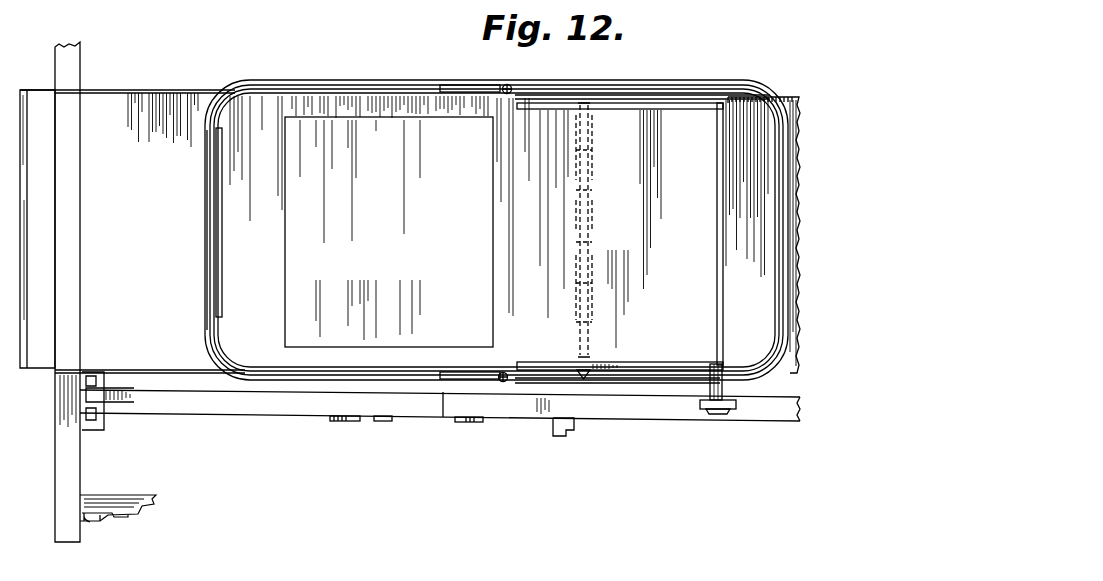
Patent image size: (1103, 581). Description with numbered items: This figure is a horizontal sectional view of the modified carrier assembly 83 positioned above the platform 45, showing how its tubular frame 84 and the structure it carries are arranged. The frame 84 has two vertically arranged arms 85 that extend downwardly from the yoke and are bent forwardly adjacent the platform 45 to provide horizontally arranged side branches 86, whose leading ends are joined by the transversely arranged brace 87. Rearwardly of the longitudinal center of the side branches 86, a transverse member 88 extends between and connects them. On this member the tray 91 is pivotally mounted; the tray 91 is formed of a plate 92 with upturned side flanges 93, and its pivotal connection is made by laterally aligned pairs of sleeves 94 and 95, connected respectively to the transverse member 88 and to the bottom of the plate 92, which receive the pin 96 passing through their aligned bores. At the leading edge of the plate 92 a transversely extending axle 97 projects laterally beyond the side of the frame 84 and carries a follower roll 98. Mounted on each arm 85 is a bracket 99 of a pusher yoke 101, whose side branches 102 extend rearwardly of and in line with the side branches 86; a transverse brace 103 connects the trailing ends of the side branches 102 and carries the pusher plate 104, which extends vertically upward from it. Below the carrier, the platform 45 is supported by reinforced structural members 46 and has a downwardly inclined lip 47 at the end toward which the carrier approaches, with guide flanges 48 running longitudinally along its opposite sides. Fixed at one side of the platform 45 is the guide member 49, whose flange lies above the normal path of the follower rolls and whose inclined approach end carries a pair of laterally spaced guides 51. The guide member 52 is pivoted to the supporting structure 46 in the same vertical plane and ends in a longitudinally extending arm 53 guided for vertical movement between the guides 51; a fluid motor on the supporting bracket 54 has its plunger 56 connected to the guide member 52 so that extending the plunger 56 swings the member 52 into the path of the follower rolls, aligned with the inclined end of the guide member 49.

The platform 45 is at (513, 207).
The structural members 46 is at (96, 516).
The lip 47 is at (42, 368).
The guide flanges 48 is at (145, 90).
The guide member 49 is at (543, 414).
The guides 51 is at (470, 423).
The guide member 52 is at (264, 414).
The arm 53 is at (443, 419).
The supporting bracket 54 is at (331, 422).
The plunger 56 is at (367, 422).
The carrier assembly 83 is at (670, 83).
The tubular frame 84 is at (770, 196).
The arms 85 is at (512, 87).
The side branches 86 is at (637, 88).
The brace 87 is at (777, 270).
The transverse member 88 is at (585, 103).
The tray 91 is at (729, 151).
The plate 92 is at (606, 229).
The side flanges 93 is at (646, 110).
The sleeves 94 is at (590, 147).
The sleeves 95 is at (590, 187).
The pin 96 is at (590, 241).
The axle 97 is at (712, 390).
The follower roll 98 is at (732, 410).
The bracket 99 is at (470, 95).
The pusher yoke 101 is at (328, 79).
The side branches 102 is at (386, 88).
The brace 103 is at (207, 216).
The pusher plate 104 is at (224, 230).